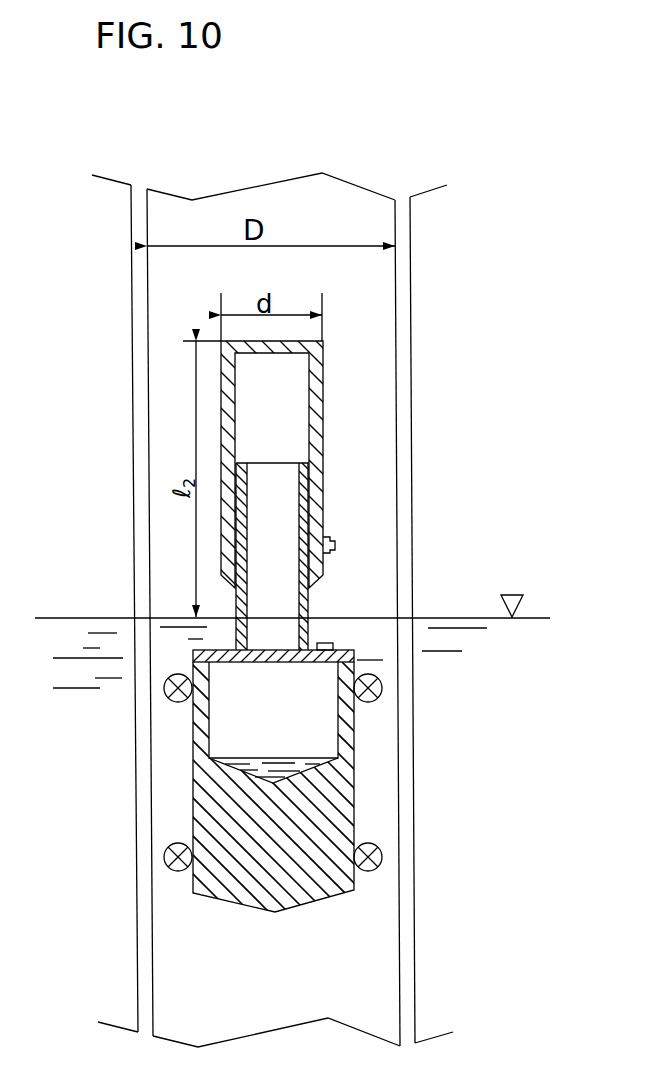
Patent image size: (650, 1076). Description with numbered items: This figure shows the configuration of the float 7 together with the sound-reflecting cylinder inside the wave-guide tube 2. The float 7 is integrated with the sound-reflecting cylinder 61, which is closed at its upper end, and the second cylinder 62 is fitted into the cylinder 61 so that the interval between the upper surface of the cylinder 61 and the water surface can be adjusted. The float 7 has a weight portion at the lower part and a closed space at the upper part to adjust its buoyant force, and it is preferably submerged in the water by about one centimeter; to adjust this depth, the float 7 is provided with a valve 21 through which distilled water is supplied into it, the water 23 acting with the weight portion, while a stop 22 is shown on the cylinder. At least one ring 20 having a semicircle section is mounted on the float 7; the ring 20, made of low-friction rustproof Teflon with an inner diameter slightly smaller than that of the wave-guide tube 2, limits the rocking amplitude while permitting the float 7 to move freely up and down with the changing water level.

The wave-guide tube 2 is at (402, 323).
The sound-reflecting cylinder (upper cylinder) 61 is at (324, 400).
The sound-reflecting cylinder (inner cylinder) 62 is at (315, 599).
The upper stopper 22 is at (335, 543).
The valve 21 is at (330, 640).
The float 7 is at (298, 911).
The liquid weight 23 is at (255, 759).
The ring 20 is at (165, 703).